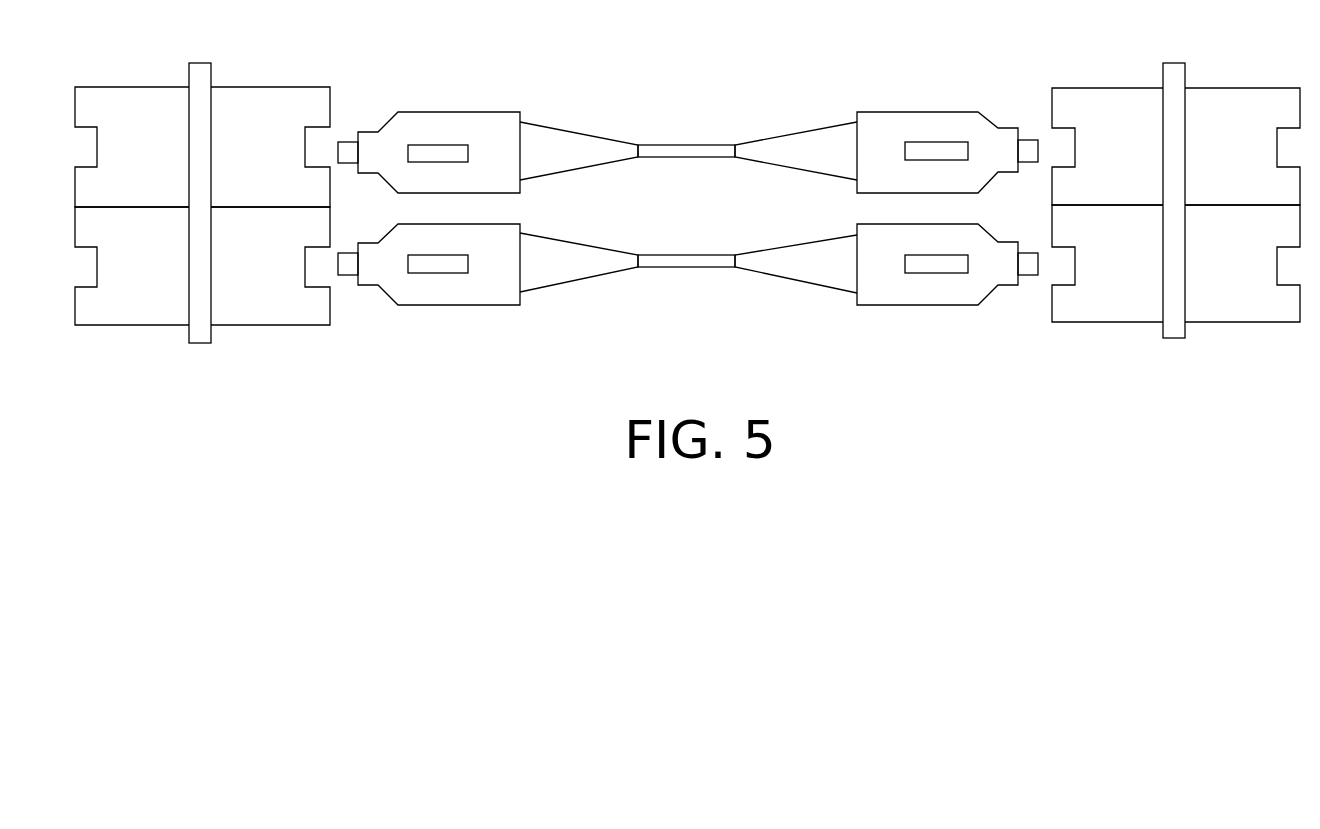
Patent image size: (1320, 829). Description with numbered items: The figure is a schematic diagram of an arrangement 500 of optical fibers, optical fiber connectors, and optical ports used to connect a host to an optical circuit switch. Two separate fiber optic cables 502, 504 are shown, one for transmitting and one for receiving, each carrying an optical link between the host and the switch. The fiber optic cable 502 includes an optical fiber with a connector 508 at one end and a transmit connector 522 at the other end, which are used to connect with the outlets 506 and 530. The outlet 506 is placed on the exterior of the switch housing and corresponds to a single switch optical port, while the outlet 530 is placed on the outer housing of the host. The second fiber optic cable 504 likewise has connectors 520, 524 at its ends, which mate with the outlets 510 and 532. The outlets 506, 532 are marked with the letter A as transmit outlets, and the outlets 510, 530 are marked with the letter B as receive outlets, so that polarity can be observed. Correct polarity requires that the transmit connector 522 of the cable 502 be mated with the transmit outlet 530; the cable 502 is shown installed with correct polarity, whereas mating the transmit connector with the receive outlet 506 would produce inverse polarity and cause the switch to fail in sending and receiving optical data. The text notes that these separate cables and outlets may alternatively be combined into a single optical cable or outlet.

The interconnect system 500 is at (313, 502).
The fiber optic cable 502 is at (615, 150).
The fiber optic cable 504 is at (688, 263).
The outlet 506 is at (273, 103).
The connector 508 is at (497, 128).
The outlet 510 is at (262, 305).
The second connector 520 is at (497, 287).
The transmit connector 522 is at (940, 128).
The fourth connector 524 is at (957, 288).
The outlet 530 is at (1118, 103).
The outlet 532 is at (1110, 302).